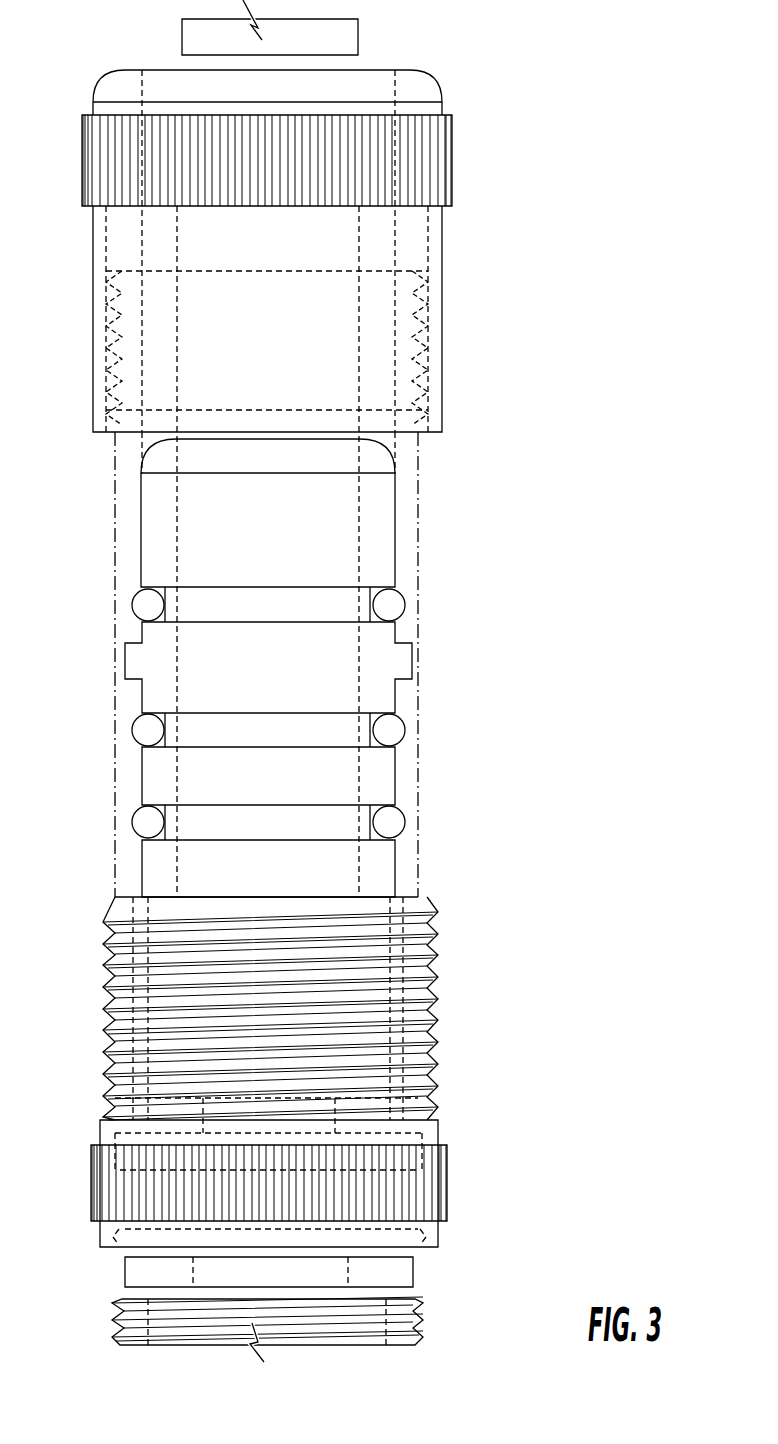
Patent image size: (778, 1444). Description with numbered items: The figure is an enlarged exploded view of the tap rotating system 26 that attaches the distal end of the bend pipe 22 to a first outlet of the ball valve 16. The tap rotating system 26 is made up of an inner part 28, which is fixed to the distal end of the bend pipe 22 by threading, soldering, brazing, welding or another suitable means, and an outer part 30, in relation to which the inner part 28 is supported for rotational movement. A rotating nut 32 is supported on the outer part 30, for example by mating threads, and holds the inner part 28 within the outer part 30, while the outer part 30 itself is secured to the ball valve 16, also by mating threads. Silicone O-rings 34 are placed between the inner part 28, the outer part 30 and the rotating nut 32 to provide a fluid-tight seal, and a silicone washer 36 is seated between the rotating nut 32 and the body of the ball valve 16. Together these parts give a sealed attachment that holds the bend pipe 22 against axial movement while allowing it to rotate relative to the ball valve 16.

The ball valve 16 is at (420, 1318).
The bend pipe 22 is at (358, 40).
The tap rotating system 26 is at (678, 172).
The inner part 28 is at (395, 523).
The outer part 30 is at (442, 313).
The rotating nut 32 is at (420, 1018).
The silicone O-rings 34 is at (392, 606).
The silicone washer 36 is at (416, 1272).